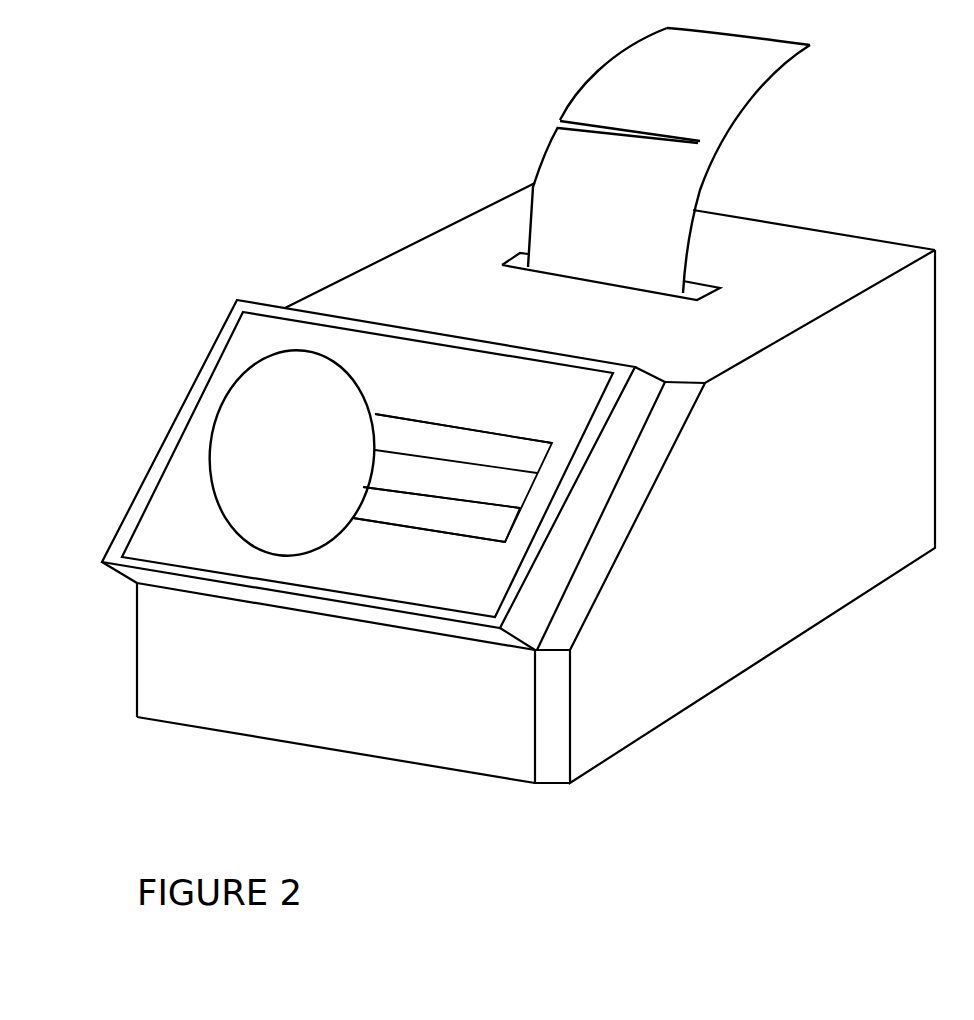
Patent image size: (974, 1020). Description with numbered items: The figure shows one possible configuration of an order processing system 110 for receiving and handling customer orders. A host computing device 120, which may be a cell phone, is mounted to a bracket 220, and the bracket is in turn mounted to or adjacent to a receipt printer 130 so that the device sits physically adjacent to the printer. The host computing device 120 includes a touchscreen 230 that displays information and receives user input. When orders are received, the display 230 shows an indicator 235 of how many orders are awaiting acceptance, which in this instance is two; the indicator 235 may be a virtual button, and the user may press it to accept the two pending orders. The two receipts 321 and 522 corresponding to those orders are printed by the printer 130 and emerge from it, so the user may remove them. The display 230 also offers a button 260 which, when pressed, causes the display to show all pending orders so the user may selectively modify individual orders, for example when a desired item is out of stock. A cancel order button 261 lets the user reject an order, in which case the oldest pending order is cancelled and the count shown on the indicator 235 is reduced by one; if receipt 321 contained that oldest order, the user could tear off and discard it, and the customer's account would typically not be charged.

The order processing system 110 is at (793, 668).
The host computing device 120 is at (212, 352).
The receipt printer 130 is at (452, 226).
The bracket 220 is at (153, 616).
The touchscreen 230 is at (183, 482).
The indicator 235 is at (218, 425).
The button 260 is at (440, 433).
The cancel order button 261 is at (435, 525).
The receipt 321 is at (725, 85).
The receipt 522 is at (565, 155).